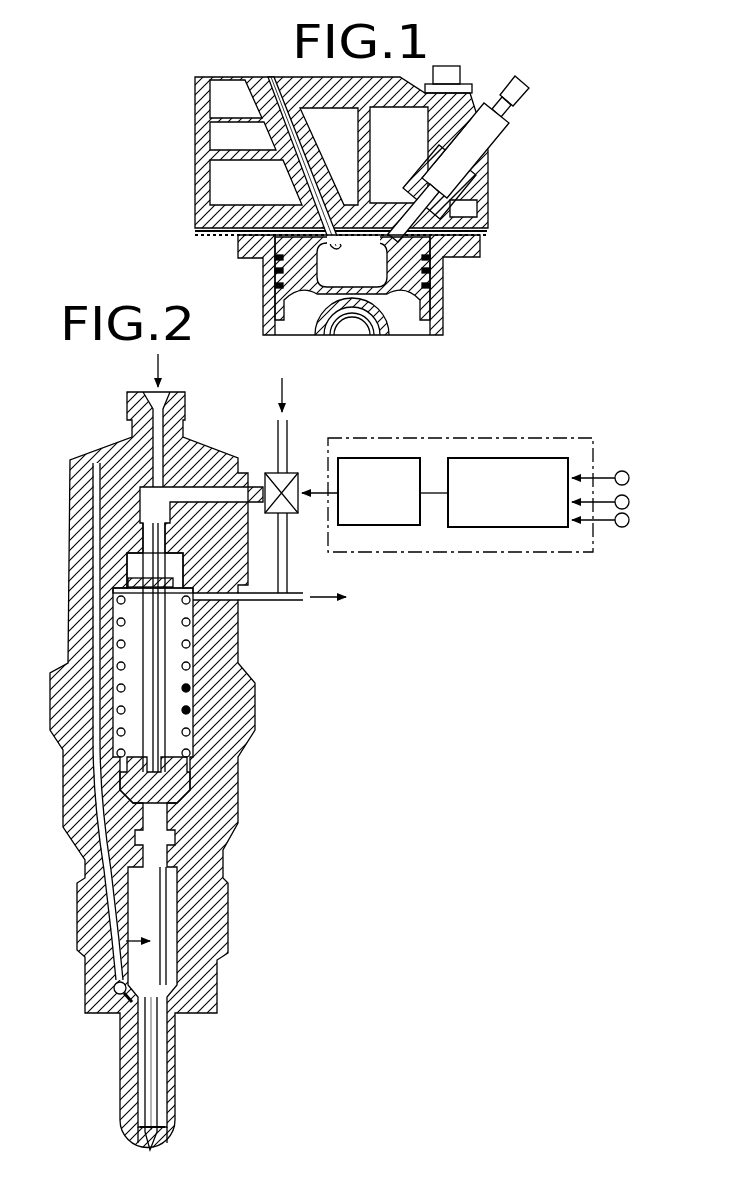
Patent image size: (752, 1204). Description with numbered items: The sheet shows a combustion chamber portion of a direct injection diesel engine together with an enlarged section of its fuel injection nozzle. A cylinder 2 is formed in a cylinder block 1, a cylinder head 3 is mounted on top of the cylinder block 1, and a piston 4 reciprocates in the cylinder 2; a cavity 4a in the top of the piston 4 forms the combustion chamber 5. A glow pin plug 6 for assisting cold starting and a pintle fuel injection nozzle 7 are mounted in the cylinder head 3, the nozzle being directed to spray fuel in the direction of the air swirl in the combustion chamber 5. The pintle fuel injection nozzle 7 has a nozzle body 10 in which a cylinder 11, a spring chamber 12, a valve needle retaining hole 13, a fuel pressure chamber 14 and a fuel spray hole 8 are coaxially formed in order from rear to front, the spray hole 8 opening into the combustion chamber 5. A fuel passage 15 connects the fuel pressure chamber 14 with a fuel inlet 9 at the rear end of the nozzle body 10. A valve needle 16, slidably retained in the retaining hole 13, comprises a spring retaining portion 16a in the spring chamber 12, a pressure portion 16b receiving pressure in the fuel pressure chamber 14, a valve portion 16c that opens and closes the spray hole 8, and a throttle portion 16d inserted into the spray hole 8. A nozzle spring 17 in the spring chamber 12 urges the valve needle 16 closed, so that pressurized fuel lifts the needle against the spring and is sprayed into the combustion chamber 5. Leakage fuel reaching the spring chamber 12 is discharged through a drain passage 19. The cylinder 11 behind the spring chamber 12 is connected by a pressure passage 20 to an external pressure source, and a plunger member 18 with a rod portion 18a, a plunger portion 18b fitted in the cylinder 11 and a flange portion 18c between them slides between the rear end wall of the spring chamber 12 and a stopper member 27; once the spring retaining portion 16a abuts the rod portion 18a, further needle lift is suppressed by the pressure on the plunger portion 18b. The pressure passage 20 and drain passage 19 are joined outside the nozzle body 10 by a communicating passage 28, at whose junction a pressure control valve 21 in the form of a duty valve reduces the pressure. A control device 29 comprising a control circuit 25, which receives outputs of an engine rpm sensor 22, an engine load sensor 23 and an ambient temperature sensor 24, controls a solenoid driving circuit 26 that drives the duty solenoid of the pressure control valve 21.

In FIG. 1, the cylinder block 1 is at (450, 272).
In FIG. 1, the cylinder 2 is at (446, 326).
In FIG. 1, the cylinder head 3 is at (224, 226).
In FIG. 1, the piston 4 is at (274, 286).
In FIG. 1, the cavity 4a is at (390, 296).
In FIG. 1, the combustion chamber 5 is at (334, 275).
In FIG. 1, the glow pin plug 6 is at (292, 163).
In FIG. 1, the pintle fuel injection nozzle 7 is at (515, 114).
In FIG. 2, the pintle fuel injection nozzle 7 is at (75, 436).
In FIG. 2, the fuel spray hole 8 is at (145, 1148).
In FIG. 2, the fuel inlet 9 is at (163, 362).
In FIG. 2, the nozzle body 10 is at (225, 738).
In FIG. 2, the cylinder 11 is at (147, 505).
In FIG. 2, the spring chamber 12 is at (175, 690).
In FIG. 2, the valve needle retaining hole 13 is at (168, 905).
In FIG. 2, the fuel pressure chamber 14 is at (174, 993).
In FIG. 2, the fuel passage 15 is at (98, 647).
In FIG. 2, the valve needle 16 is at (85, 955).
In FIG. 2, the spring retaining portion 16a is at (187, 784).
In FIG. 2, the pressure portion 16b is at (108, 1020).
In FIG. 2, the valve portion 16c is at (177, 1131).
In FIG. 2, the throttle portion 16d is at (152, 1150).
In FIG. 2, the nozzle spring 17 is at (118, 720).
In FIG. 2, the plunger member 18 is at (140, 686).
In FIG. 2, the rod portion 18a is at (132, 604).
In FIG. 2, the plunger portion 18b is at (140, 560).
In FIG. 2, the flange portion 18c is at (130, 580).
In FIG. 2, the drain passage 19 is at (286, 598).
In FIG. 2, the pressure passage 20 is at (213, 493).
In FIG. 2, the pressure control valve 21 is at (290, 470).
In FIG. 2, the engine rpm sensor 22 is at (629, 474).
In FIG. 2, the engine load sensor 23 is at (629, 500).
In FIG. 2, the ambient temperature sensor 24 is at (629, 522).
In FIG. 2, the control circuit 25 is at (542, 456).
In FIG. 2, the solenoid driving circuit 26 is at (362, 456).
In FIG. 2, the stopper member 27 is at (194, 591).
In FIG. 2, the communicating passage 28 is at (284, 571).
In FIG. 2, the control device 29 is at (432, 436).